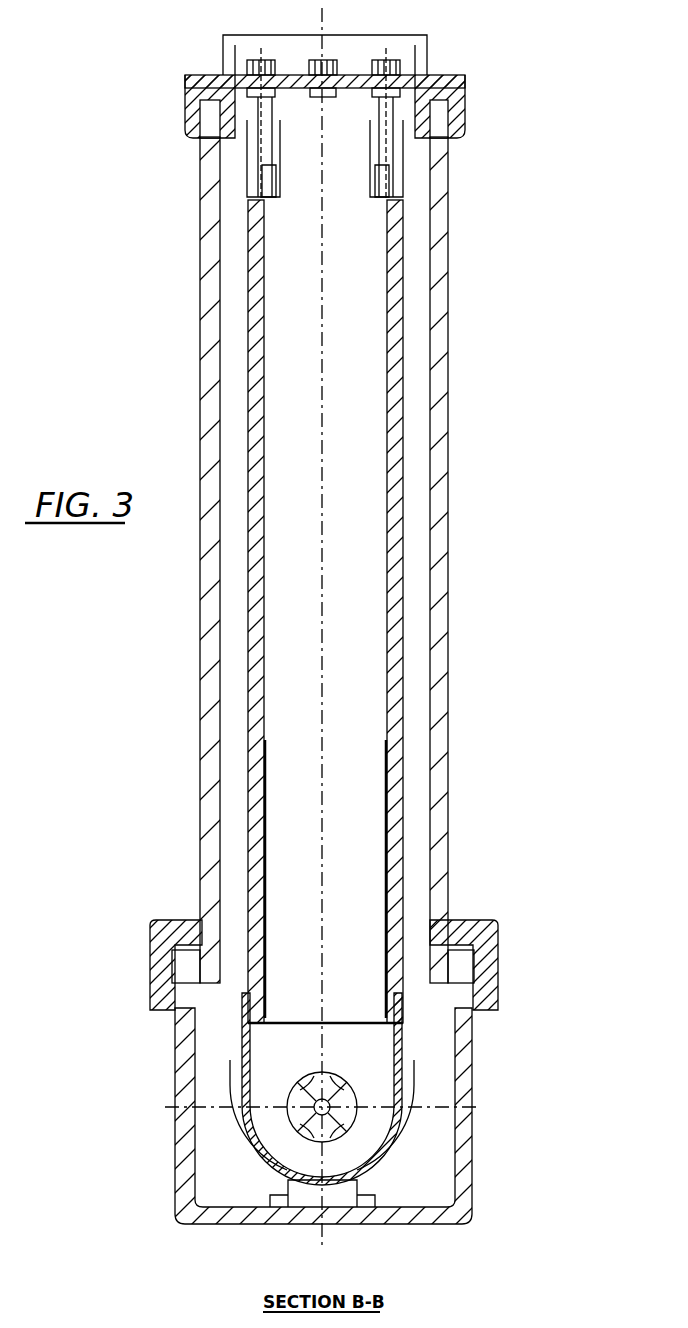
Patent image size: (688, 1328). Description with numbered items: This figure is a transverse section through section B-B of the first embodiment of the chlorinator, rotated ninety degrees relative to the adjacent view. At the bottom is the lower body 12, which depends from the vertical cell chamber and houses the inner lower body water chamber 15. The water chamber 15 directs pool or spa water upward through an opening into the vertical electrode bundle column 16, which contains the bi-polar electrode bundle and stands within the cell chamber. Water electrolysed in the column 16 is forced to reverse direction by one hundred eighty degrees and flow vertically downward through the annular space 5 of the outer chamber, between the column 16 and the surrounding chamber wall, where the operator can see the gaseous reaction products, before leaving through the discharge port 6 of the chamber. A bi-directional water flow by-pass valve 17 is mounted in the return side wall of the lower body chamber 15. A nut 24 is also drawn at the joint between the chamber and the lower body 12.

The annular space of outer chamber 5 is at (418, 423).
The vertical electrode bundle column 16 is at (400, 560).
The right union nut 24 is at (495, 940).
The discharge port 6 is at (238, 970).
The lower body 12 is at (175, 1175).
The inner lower body water chamber 15 is at (437, 1160).
The bi-directional water flow by-pass valve 17 is at (353, 1087).